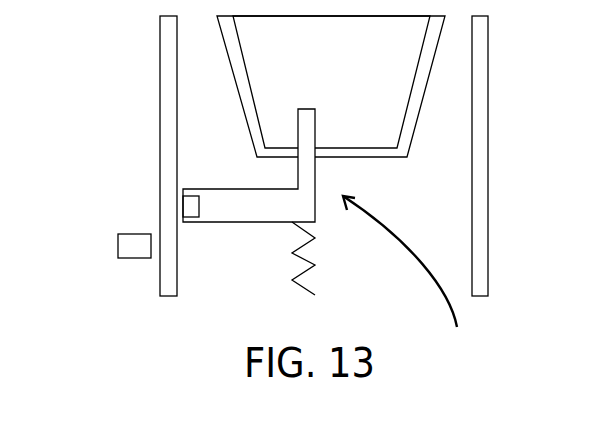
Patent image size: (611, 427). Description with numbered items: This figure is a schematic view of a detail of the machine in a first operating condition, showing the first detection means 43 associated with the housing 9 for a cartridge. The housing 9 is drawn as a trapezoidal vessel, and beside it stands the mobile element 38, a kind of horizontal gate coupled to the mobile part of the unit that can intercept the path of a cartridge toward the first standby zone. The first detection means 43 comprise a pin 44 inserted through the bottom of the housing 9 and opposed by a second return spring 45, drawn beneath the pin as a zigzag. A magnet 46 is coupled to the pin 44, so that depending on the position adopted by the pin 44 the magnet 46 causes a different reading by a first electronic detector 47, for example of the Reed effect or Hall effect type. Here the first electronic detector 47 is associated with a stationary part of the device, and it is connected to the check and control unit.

The housing 9 is at (385, 95).
The mobile element 38 is at (478, 247).
The first detection means 43 is at (413, 269).
The pin 44 is at (308, 138).
The second return spring 45 is at (300, 257).
The magnet 46 is at (193, 210).
The first electronic detector 47 is at (135, 246).